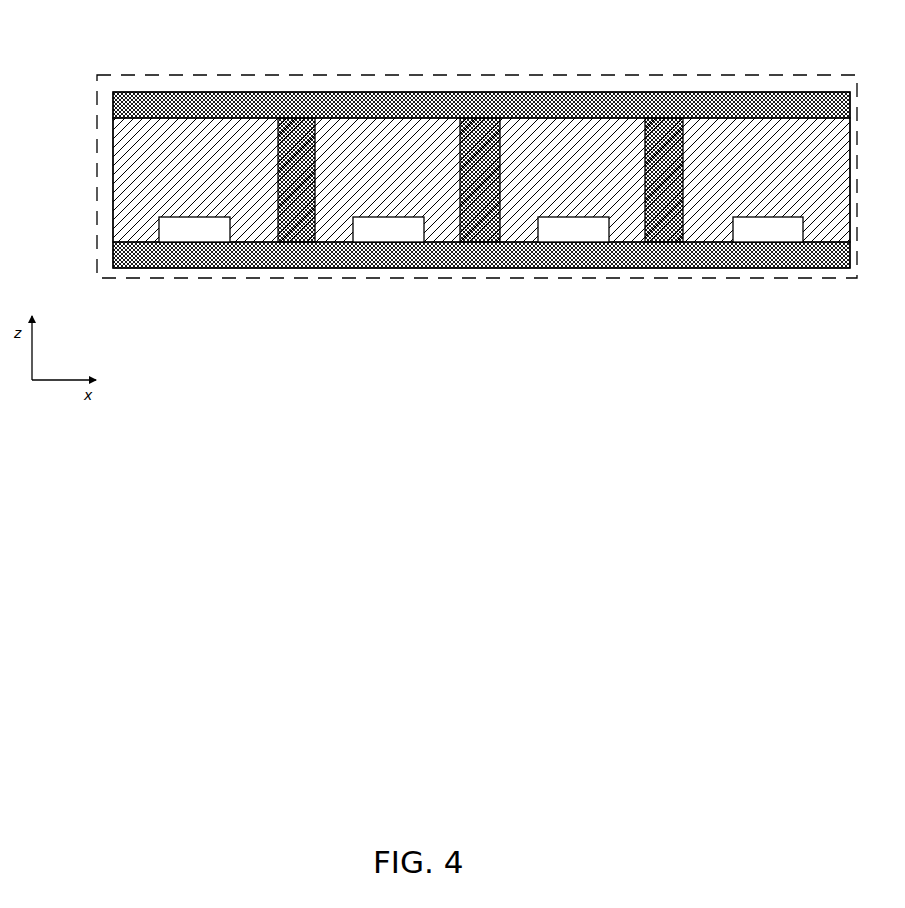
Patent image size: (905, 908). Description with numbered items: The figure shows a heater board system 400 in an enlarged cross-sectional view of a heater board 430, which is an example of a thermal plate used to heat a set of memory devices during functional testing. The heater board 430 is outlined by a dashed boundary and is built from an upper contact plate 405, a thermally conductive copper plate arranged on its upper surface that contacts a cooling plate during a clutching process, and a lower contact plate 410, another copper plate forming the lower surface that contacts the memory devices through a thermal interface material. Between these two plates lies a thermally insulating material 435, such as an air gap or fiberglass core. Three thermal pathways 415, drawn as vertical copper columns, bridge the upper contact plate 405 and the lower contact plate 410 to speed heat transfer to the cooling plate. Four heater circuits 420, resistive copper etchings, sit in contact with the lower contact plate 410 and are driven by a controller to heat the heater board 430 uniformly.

The heater board system 400 is at (658, 782).
The heater board 430 is at (283, 75).
The upper contact plate 405 is at (113, 105).
The thermally insulating material 435 is at (113, 181).
The lower contact plate 410 is at (113, 259).
The thermal pathways 415 is at (297, 243).
The heater circuits 420 is at (203, 243).